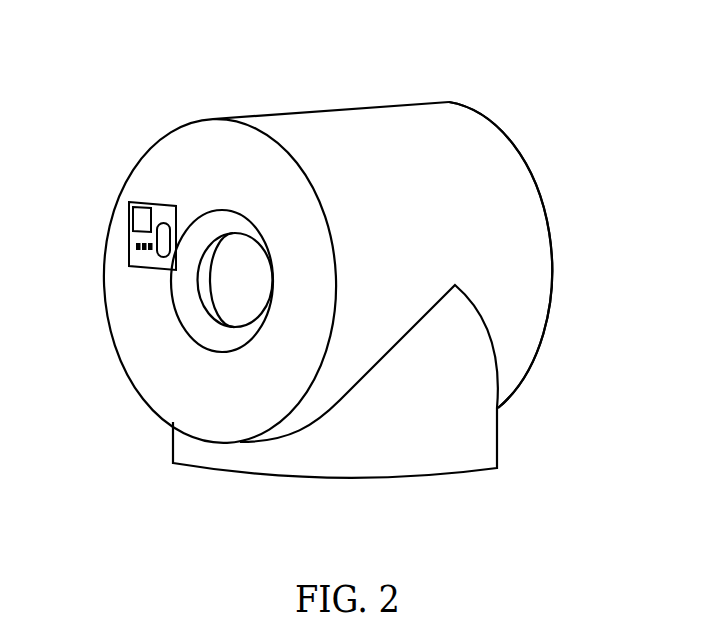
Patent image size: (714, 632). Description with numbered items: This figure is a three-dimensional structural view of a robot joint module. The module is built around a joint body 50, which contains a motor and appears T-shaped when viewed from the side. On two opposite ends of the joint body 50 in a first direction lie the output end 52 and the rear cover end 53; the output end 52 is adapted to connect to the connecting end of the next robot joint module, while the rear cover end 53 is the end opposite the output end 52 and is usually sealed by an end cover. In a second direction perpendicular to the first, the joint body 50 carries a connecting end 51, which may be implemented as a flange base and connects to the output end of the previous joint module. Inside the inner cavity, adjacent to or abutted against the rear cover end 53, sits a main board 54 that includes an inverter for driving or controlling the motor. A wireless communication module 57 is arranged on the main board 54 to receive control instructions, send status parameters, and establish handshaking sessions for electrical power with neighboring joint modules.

The joint body 50 is at (333, 120).
The connecting end 51 is at (210, 458).
The output end 52 is at (560, 222).
The rear cover end 53 is at (188, 138).
The main board 54 is at (130, 256).
The wireless communication module 57 is at (145, 223).